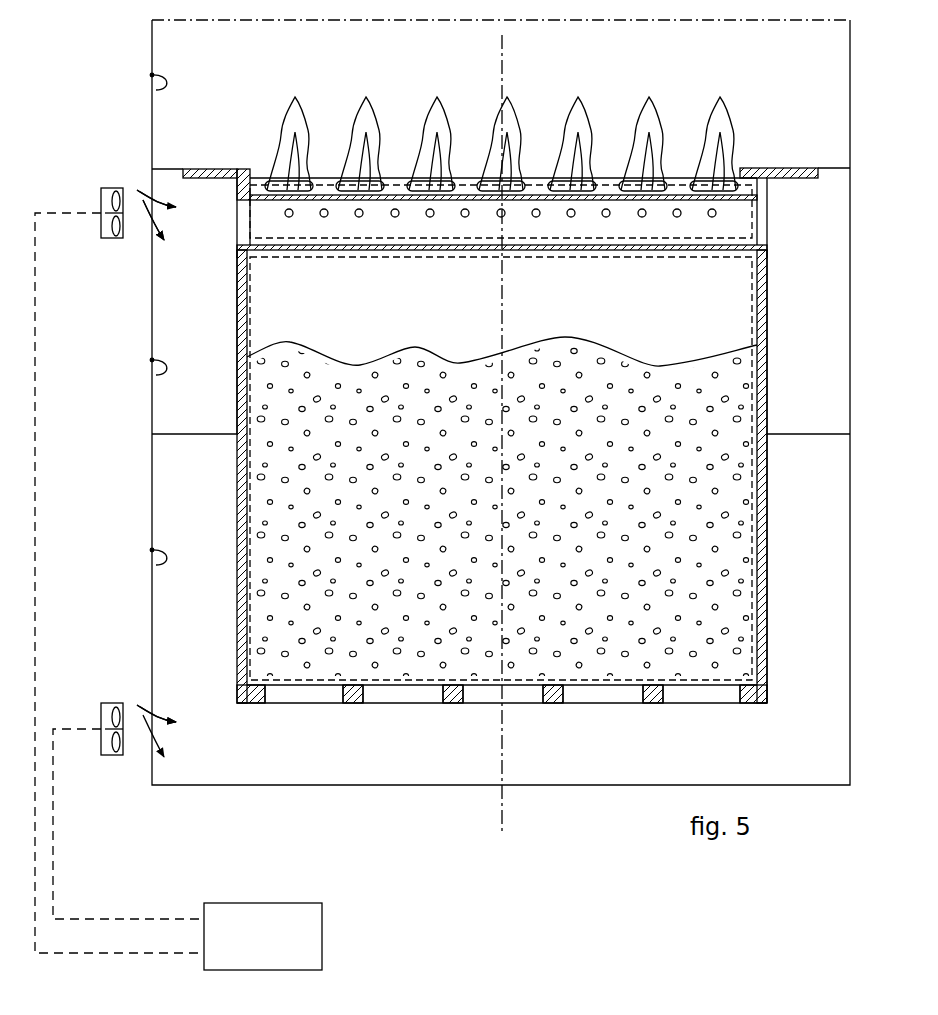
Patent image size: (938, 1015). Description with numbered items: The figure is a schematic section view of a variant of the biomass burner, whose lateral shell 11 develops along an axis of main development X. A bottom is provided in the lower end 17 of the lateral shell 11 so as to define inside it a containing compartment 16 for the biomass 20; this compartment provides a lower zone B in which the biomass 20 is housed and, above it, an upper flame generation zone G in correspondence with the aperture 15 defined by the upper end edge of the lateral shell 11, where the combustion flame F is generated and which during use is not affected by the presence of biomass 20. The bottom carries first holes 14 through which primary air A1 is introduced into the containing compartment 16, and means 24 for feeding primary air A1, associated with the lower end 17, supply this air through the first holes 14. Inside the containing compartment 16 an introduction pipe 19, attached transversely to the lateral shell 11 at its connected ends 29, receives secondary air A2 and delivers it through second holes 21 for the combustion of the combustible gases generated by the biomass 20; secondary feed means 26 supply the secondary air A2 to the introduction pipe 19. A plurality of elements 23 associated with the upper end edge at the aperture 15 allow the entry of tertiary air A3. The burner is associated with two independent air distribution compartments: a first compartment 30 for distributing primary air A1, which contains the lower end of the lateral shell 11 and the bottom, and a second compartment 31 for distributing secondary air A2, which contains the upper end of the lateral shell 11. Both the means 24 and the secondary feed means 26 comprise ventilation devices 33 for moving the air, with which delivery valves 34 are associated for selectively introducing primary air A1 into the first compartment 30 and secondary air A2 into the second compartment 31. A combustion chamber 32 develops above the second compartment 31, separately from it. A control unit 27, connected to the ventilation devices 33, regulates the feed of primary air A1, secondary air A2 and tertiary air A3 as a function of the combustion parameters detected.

The lateral shell 11 is at (770, 385).
The first holes 14 is at (275, 697).
The aperture 15 is at (642, 168).
The containing compartment 16 is at (757, 535).
The lower end 17 is at (771, 699).
The introduction pipe 19 is at (428, 253).
The biomass 20 is at (257, 625).
The second holes 21 is at (297, 198).
The elements for the entry of tertiary air 23 is at (297, 190).
The means for feeding primary air 24 is at (100, 700).
The secondary feed means 26 is at (100, 185).
The control unit 27 is at (263, 936).
The connected ends 29 is at (262, 256).
The first compartment 30 is at (156, 559).
The second compartment 31 is at (156, 371).
The combustion chamber 32 is at (156, 88).
The ventilation devices 33 is at (100, 228).
The delivery valves 34 is at (152, 216).
The primary air A1 is at (143, 742).
The secondary air A2 is at (143, 225).
The tertiary air A3 is at (153, 220).
The lower zone B is at (393, 681).
The combustion flame F is at (284, 127).
The upper flame generation zone G is at (752, 213).
The axis of main development X is at (502, 50).